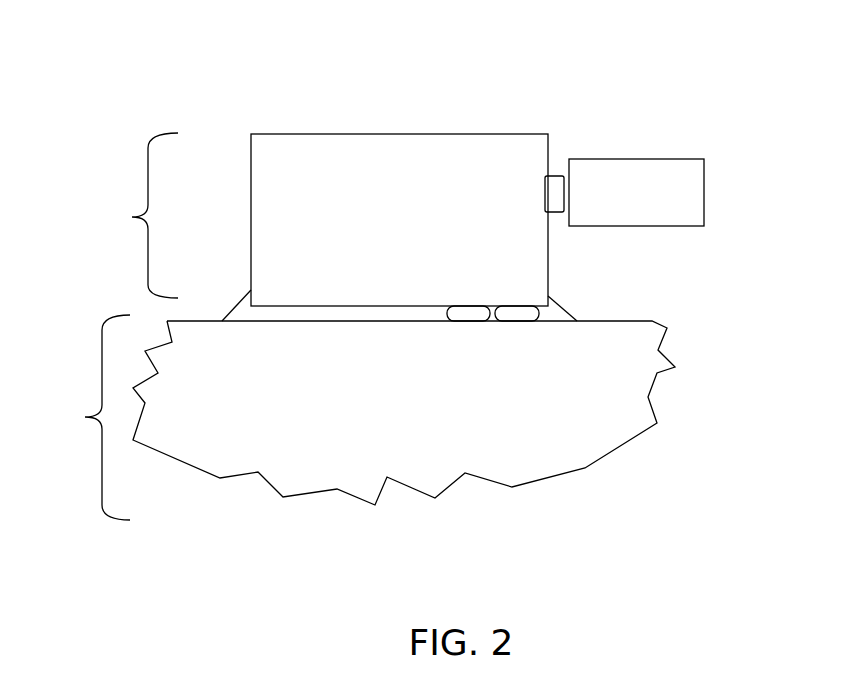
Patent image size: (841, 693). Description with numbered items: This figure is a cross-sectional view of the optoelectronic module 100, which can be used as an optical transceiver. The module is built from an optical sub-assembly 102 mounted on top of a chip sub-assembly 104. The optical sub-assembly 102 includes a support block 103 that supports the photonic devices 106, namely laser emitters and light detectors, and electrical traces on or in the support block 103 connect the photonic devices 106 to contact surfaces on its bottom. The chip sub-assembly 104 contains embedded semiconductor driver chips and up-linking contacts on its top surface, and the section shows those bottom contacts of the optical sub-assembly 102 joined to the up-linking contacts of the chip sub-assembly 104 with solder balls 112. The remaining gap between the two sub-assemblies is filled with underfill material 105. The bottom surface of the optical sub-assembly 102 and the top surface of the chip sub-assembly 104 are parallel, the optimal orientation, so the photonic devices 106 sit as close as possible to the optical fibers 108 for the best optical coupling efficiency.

The optoelectronic module 100 is at (216, 40).
The optical sub-assembly 102 is at (129, 215).
The support block 103 is at (325, 133).
The chip sub-assembly 104 is at (353, 417).
The underfill material 105 is at (552, 302).
The photonic devices 106 is at (553, 176).
The optical fibers 108 is at (645, 157).
The solder balls 112 is at (548, 306).